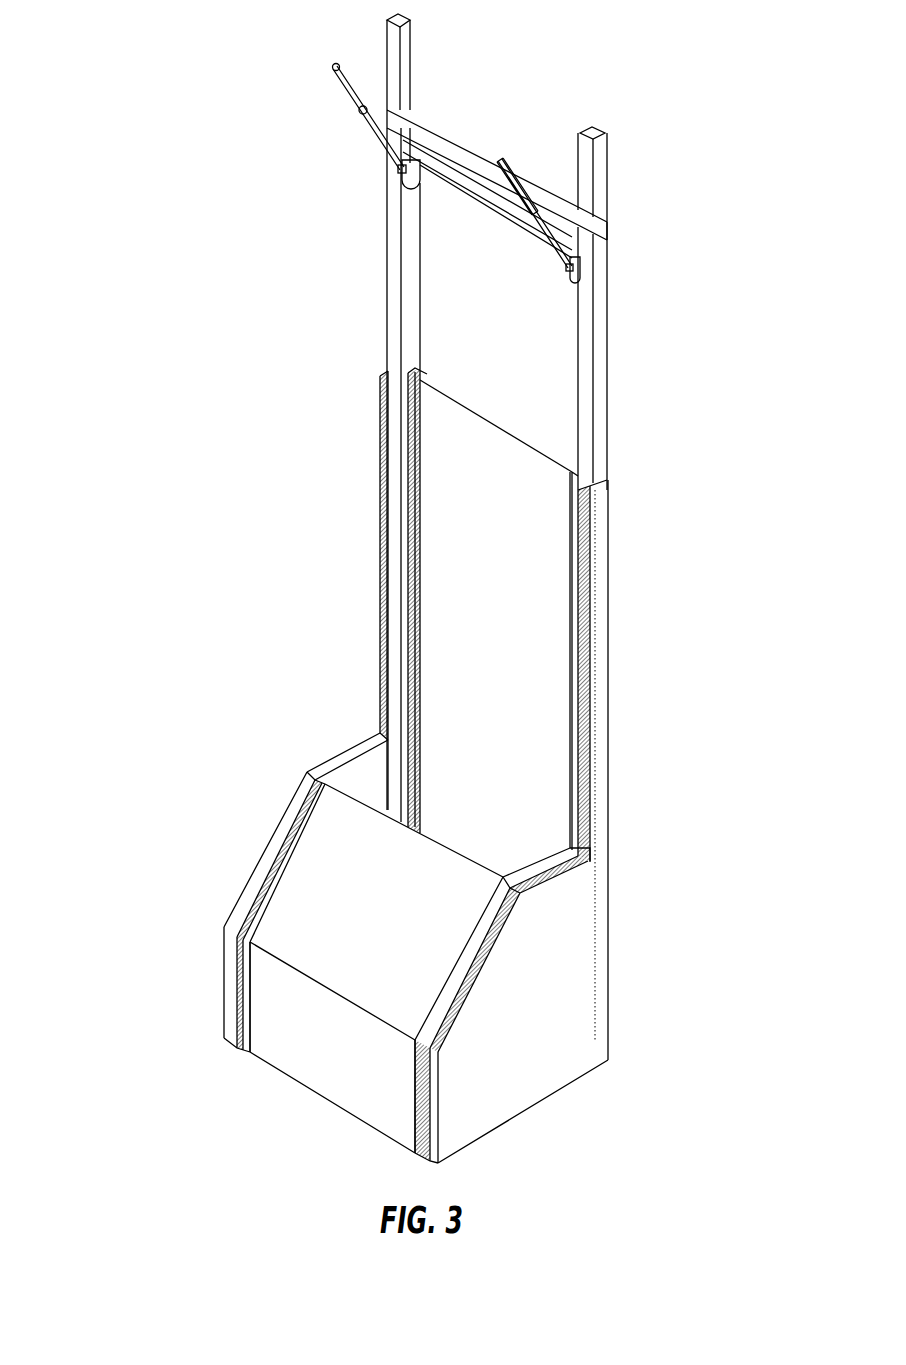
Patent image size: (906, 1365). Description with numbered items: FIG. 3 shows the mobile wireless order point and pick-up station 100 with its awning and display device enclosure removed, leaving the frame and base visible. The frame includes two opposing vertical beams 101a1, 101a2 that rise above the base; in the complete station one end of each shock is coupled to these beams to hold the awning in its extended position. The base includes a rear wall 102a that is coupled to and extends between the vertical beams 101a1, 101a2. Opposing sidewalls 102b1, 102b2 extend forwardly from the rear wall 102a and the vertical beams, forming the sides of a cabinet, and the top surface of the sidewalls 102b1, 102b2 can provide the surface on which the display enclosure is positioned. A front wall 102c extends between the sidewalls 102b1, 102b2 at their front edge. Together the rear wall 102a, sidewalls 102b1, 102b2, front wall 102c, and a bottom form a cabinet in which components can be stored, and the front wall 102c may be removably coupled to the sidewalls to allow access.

The mobile wireless order point and pick-up station 100 is at (105, 55).
The vertical beam 101a1 is at (610, 402).
The vertical beam 101a2 is at (385, 270).
The rear wall 102a is at (497, 622).
The sidewall 102b1 is at (533, 983).
The sidewall 102b2 is at (270, 835).
The front wall 102c is at (307, 1023).